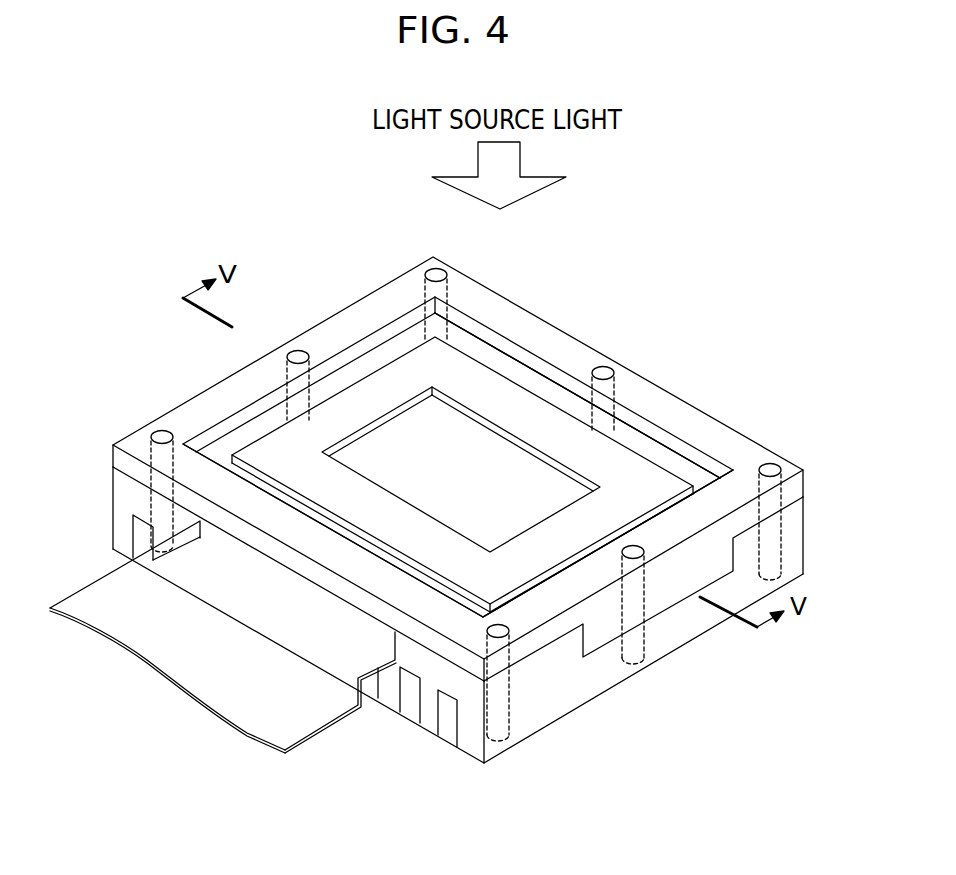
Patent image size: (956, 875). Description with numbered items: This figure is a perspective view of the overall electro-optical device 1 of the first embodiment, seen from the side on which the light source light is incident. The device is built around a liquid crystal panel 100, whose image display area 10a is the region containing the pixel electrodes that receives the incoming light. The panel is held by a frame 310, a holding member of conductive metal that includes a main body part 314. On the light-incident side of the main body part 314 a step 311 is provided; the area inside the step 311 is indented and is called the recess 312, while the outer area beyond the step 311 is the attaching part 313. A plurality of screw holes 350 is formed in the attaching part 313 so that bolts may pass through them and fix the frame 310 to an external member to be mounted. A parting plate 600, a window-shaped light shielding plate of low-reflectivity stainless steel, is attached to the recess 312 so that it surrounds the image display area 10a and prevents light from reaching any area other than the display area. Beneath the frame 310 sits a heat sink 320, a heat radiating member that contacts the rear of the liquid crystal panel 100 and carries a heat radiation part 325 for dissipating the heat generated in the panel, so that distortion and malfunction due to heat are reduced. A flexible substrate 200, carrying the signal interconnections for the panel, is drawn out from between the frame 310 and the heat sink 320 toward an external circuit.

The electro-optical device 1 is at (692, 266).
The frame 310 is at (462, 286).
The step 311 is at (643, 423).
The recess 312 is at (672, 465).
The attaching part 313 is at (743, 453).
The main body part 314 is at (803, 362).
The screw holes 350 is at (779, 466).
The heat sink 320 is at (804, 537).
The heat radiation part 325 is at (405, 733).
The parting plate 600 is at (465, 367).
The liquid crystal panel 100 is at (458, 427).
The image display area 10a is at (461, 469).
The flexible substrate 200 is at (97, 585).